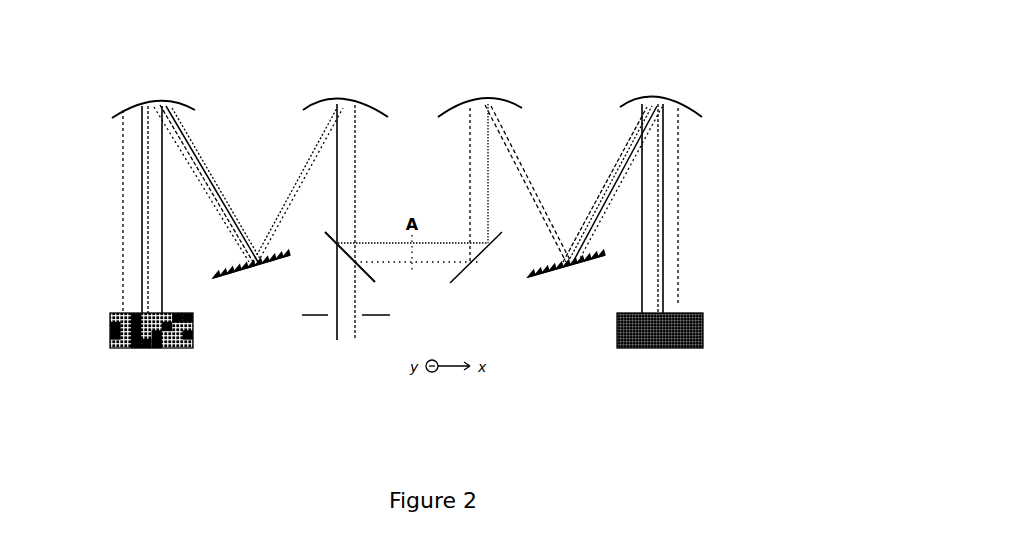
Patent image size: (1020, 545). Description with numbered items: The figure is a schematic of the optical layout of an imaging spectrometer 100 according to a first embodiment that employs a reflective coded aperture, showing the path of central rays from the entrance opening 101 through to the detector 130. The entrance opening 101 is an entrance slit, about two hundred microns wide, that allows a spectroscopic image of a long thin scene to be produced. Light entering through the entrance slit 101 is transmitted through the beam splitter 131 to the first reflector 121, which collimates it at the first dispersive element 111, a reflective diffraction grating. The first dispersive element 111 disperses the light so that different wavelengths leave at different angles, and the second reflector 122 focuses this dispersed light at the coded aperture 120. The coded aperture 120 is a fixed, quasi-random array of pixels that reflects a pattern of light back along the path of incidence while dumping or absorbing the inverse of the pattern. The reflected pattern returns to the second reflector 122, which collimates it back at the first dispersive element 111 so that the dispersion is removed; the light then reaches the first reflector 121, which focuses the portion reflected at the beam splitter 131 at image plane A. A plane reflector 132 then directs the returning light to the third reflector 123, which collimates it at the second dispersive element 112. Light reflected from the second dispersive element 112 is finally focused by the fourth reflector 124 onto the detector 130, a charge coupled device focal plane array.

The imaging spectrometer 100 is at (641, 78).
The entrance opening 101 is at (372, 312).
The first dispersive element 111 is at (253, 262).
The second dispersive element 112 is at (568, 262).
The coded aperture 120 is at (195, 325).
The first reflector 121 is at (340, 102).
The second reflector 122 is at (157, 102).
The third reflector 123 is at (483, 102).
The fourth reflector 124 is at (685, 108).
The detector 130 is at (700, 325).
The beam splitter 131 is at (352, 255).
The plane reflector 132 is at (475, 263).